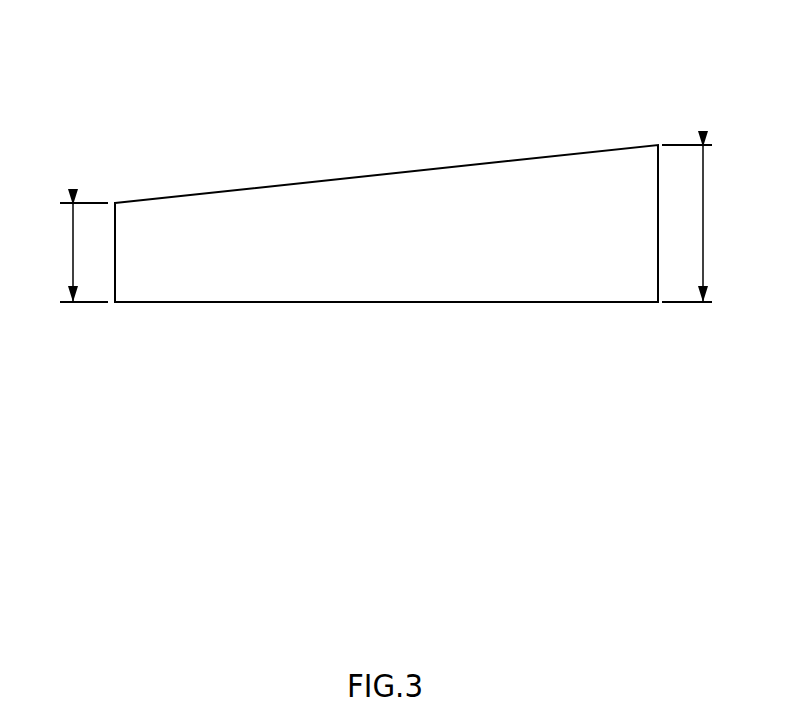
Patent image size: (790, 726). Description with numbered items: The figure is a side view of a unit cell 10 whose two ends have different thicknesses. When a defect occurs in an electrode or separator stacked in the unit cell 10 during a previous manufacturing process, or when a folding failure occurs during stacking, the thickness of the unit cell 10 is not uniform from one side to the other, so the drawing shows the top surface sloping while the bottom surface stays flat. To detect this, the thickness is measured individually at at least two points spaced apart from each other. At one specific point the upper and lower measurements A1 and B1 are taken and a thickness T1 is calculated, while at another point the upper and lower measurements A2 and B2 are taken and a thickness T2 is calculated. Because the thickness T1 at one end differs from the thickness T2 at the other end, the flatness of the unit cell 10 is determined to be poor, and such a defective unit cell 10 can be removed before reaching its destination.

The unit cell 10 is at (382, 118).
The first upper measurement point A1 is at (658, 28).
The second upper measurement point A2 is at (115, 87).
The first lower measurement point B1 is at (658, 307).
The second lower measurement point B2 is at (115, 307).
The first thickness T1 is at (701, 223).
The second thickness T2 is at (74, 252).